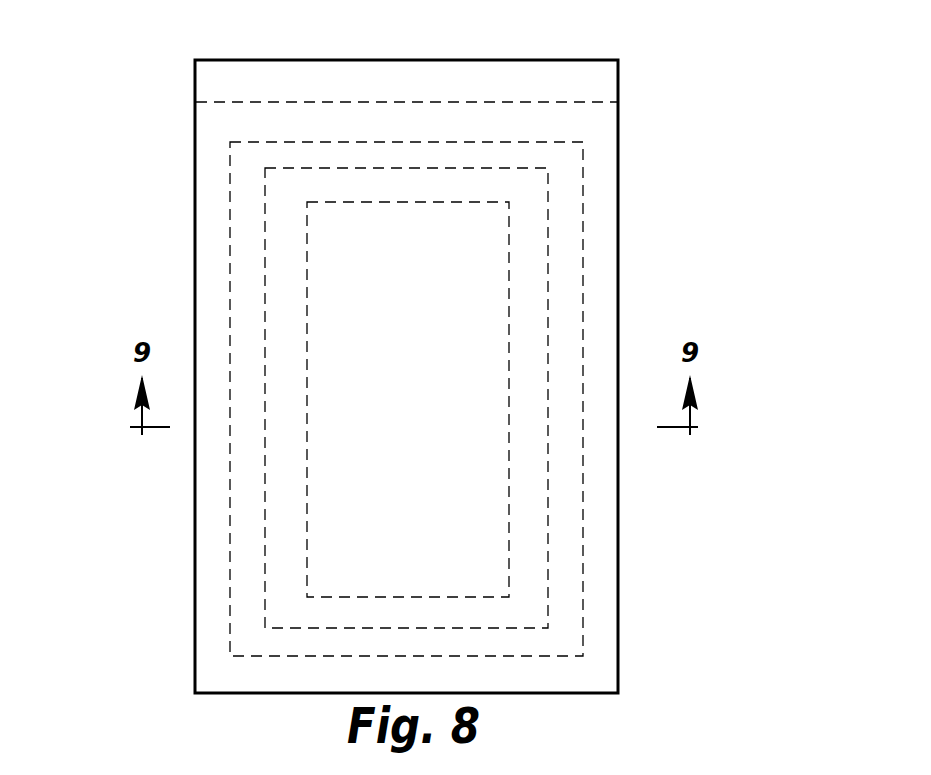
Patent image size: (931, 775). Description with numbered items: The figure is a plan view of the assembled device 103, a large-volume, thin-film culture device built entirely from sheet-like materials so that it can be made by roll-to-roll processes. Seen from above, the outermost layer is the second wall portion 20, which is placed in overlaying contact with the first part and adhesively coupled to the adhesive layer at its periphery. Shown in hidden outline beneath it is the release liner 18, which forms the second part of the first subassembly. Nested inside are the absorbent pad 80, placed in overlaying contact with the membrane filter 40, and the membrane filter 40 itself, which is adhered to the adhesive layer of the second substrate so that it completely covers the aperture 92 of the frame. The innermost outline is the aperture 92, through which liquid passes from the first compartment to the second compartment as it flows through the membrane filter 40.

The device 103 is at (658, 57).
The release liner 18 is at (578, 104).
The absorbent pad 80 is at (583, 213).
The membrane filter 40 is at (548, 292).
The aperture 92 is at (508, 343).
The second wall portion 20 is at (426, 472).